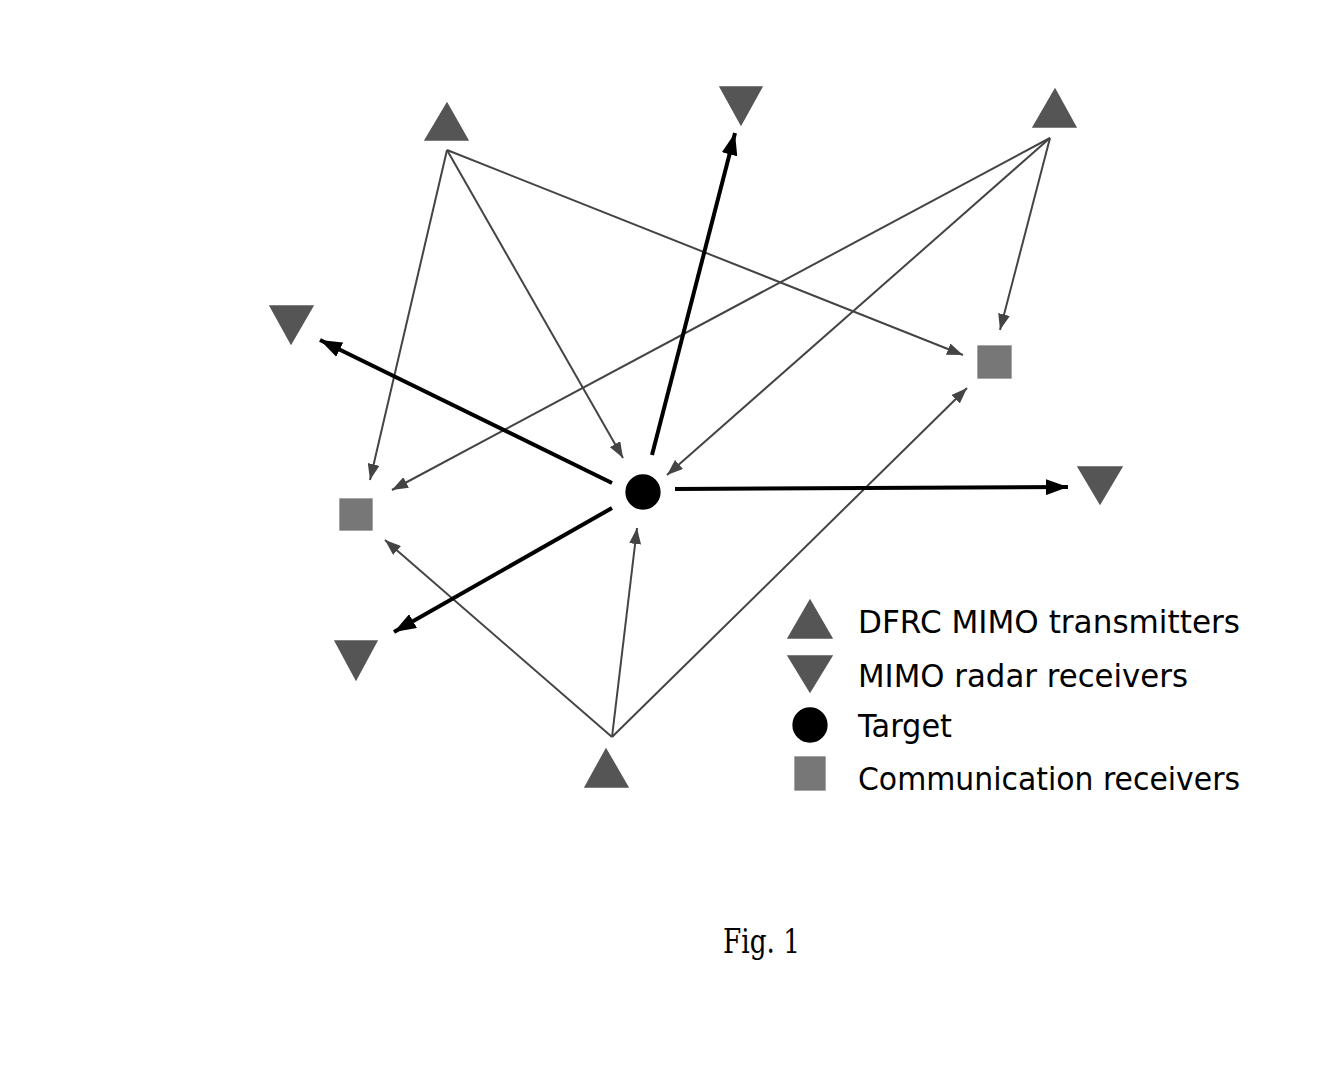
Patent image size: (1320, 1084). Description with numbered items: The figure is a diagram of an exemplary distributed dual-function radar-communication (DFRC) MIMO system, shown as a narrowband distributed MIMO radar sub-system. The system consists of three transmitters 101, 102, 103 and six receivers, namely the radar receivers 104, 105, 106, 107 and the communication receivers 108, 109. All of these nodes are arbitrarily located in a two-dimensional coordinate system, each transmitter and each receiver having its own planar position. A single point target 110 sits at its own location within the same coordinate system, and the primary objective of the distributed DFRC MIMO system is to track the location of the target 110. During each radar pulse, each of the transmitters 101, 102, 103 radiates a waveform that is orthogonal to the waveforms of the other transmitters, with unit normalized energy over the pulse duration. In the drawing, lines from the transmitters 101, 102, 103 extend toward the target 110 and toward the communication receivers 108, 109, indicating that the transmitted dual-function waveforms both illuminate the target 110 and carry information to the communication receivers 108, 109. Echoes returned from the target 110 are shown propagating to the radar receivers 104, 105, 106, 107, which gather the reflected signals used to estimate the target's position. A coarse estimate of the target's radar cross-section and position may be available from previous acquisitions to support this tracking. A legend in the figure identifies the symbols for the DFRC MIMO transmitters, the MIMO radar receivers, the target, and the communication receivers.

The transmitter 101 is at (420, 128).
The transmitter 102 is at (1042, 112).
The transmitter 103 is at (585, 780).
The radar receiver 104 is at (270, 316).
The radar receiver 105 is at (727, 100).
The radar receiver 106 is at (1110, 470).
The radar receiver 107 is at (345, 658).
The communication receiver 108 is at (340, 512).
The communication receiver 109 is at (1013, 358).
The point target 110 is at (660, 480).